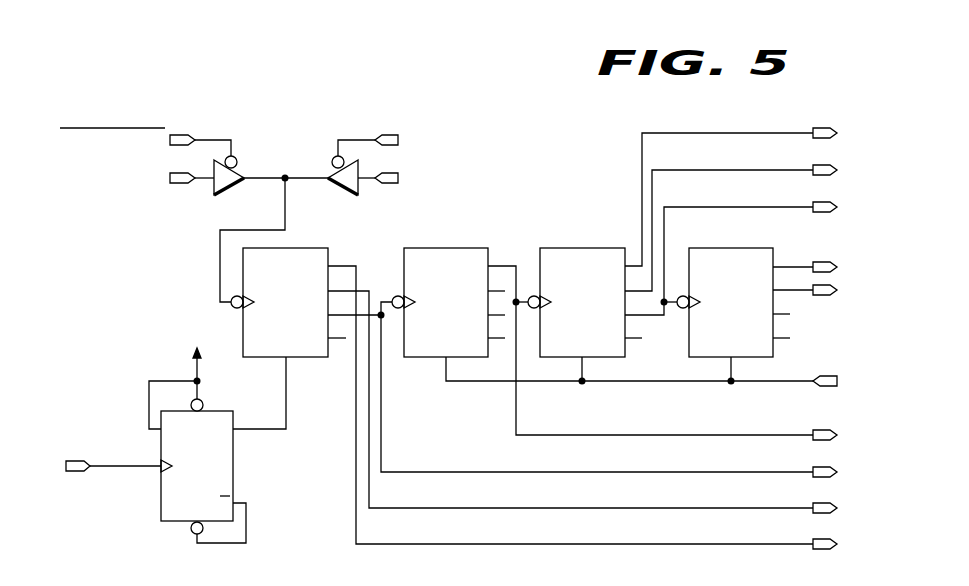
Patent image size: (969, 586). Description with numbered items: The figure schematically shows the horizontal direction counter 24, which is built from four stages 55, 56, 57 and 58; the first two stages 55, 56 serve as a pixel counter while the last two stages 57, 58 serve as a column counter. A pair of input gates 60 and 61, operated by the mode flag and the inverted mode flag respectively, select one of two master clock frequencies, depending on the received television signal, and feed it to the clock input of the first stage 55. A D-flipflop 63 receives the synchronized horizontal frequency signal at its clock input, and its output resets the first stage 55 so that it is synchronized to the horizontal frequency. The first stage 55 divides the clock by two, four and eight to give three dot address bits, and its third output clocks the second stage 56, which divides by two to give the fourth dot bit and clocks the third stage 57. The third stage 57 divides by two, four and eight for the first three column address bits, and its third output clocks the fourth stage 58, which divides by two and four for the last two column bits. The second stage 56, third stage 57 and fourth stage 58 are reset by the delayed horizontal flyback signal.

The horizontal direction counter 24 is at (540, 92).
The first stage 55 is at (310, 358).
The second stage 56 is at (422, 358).
The third stage 57 is at (590, 248).
The fourth stage 58 is at (742, 248).
The input gate 60 is at (334, 186).
The input gate 61 is at (232, 184).
The D-flipflop 63 is at (222, 411).